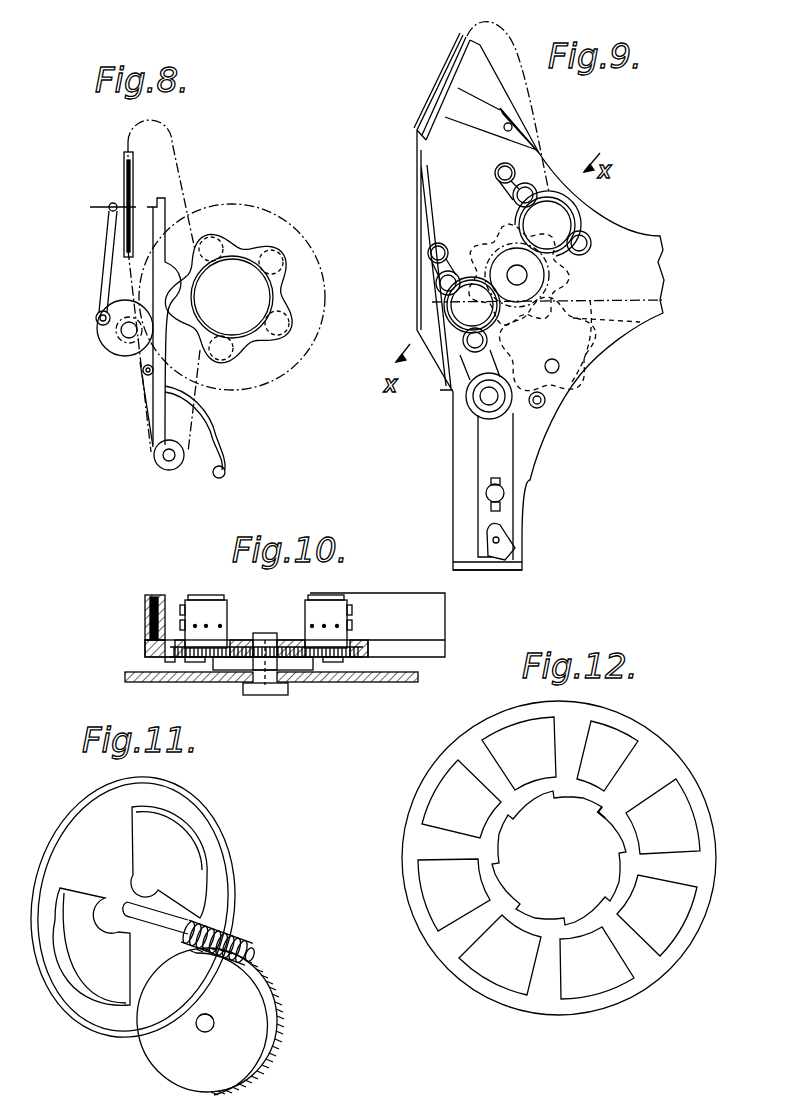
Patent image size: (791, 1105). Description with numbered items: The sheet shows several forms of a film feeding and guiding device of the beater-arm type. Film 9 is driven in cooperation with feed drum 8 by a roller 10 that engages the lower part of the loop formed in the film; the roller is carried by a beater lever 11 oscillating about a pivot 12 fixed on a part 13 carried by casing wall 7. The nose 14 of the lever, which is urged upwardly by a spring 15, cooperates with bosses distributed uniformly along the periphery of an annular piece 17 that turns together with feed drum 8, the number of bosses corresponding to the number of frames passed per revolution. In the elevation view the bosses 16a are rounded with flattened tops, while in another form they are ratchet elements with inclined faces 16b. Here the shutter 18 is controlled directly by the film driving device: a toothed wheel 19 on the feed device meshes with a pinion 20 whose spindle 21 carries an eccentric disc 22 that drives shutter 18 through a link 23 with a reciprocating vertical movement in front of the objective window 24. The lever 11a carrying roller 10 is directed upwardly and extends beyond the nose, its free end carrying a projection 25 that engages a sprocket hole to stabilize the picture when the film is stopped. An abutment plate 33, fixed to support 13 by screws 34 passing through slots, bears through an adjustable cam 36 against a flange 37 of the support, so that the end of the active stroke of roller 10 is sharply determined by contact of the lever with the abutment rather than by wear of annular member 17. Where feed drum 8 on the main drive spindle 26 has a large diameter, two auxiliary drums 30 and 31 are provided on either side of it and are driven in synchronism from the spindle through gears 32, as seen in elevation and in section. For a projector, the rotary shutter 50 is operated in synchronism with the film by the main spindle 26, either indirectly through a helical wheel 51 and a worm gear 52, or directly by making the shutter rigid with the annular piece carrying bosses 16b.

In FIG. 10, the casing wall 7 is at (172, 681).
In FIG. 8, the feed drum 8 is at (242, 320).
In FIG. 8, the film 9 is at (176, 158).
In FIG. 9, the film 9 is at (590, 236).
In FIG. 8, the roller 10 is at (155, 458).
In FIG. 9, the roller 10 is at (480, 397).
In FIG. 9, the beater lever 11 is at (545, 401).
In FIG. 8, the lever 11a is at (153, 407).
In FIG. 8, the pivot 12 is at (144, 376).
In FIG. 9, the pivot 12 is at (557, 370).
In FIG. 9, the part 13 is at (590, 220).
In FIG. 10, the part 13 is at (242, 640).
In FIG. 8, the nose 14 is at (168, 300).
In FIG. 9, the nose 14 is at (617, 324).
In FIG. 9, the spring 15 is at (574, 389).
In FIG. 8, the bosses 16a is at (254, 240).
In FIG. 9, the inclined faces 16b is at (585, 340).
In FIG. 12, the inclined faces 16b is at (600, 810).
In FIG. 8, the annular piece 17 is at (256, 258).
In FIG. 12, the annular piece 17 is at (608, 888).
In FIG. 8, the shutter 18 is at (122, 190).
In FIG. 8, the toothed wheel 19 is at (268, 384).
In FIG. 8, the pinion 20 is at (118, 337).
In FIG. 8, the spindle 21 is at (128, 334).
In FIG. 8, the eccentric disc 22 is at (96, 321).
In FIG. 8, the link 23 is at (104, 262).
In FIG. 8, the objective window 24 is at (95, 209).
In FIG. 8, the projection 25 is at (158, 204).
In FIG. 9, the main drive spindle 26 is at (520, 274).
In FIG. 10, the main drive spindle 26 is at (268, 640).
In FIG. 11, the main drive spindle 26 is at (196, 1028).
In FIG. 9, the auxiliary drum 30 is at (548, 213).
In FIG. 10, the auxiliary drum 30 is at (321, 607).
In FIG. 9, the auxiliary drum 31 is at (460, 300).
In FIG. 10, the auxiliary drum 31 is at (199, 612).
In FIG. 9, the gears 32 is at (442, 318).
In FIG. 10, the gears 32 is at (282, 666).
In FIG. 9, the abutment plate 33 is at (502, 431).
In FIG. 9, the screws 34 is at (505, 493).
In FIG. 9, the cam 36 is at (508, 545).
In FIG. 9, the flange 37 is at (497, 573).
In FIG. 11, the rotary shutter 50 is at (214, 846).
In FIG. 12, the rotary shutter 50 is at (474, 749).
In FIG. 11, the helical wheel 51 is at (235, 990).
In FIG. 11, the worm gear 52 is at (236, 934).